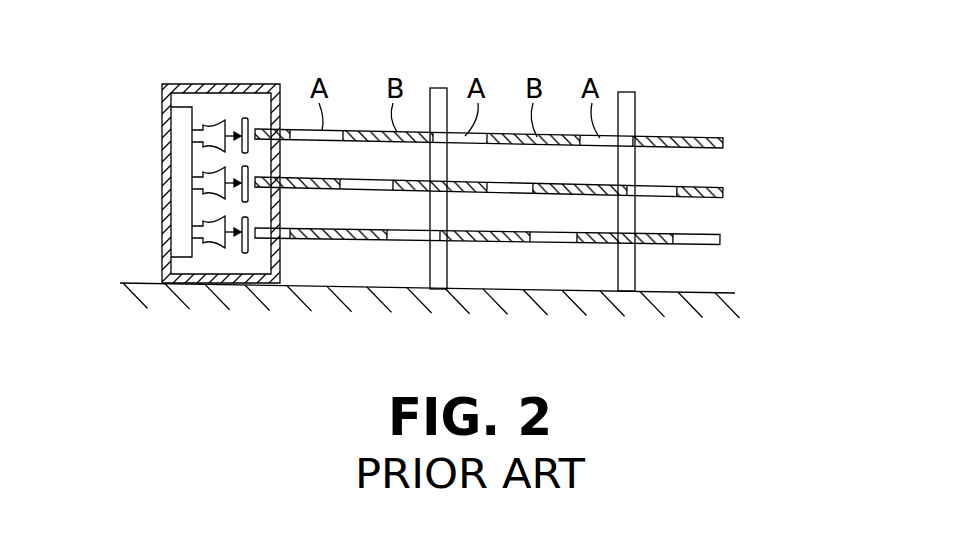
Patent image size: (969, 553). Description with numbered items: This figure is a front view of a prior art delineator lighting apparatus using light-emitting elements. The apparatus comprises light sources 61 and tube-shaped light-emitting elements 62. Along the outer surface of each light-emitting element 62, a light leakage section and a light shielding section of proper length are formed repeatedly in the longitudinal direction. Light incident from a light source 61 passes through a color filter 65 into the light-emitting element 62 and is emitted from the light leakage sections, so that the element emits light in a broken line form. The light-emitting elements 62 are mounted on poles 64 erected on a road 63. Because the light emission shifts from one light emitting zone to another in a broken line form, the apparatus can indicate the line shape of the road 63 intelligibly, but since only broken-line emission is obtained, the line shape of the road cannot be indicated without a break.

The light source 61 is at (202, 146).
The tube-shaped light-emitting element 62 is at (723, 147).
The road 63 is at (333, 303).
The pole 64 is at (437, 275).
The color filter 65 is at (243, 117).